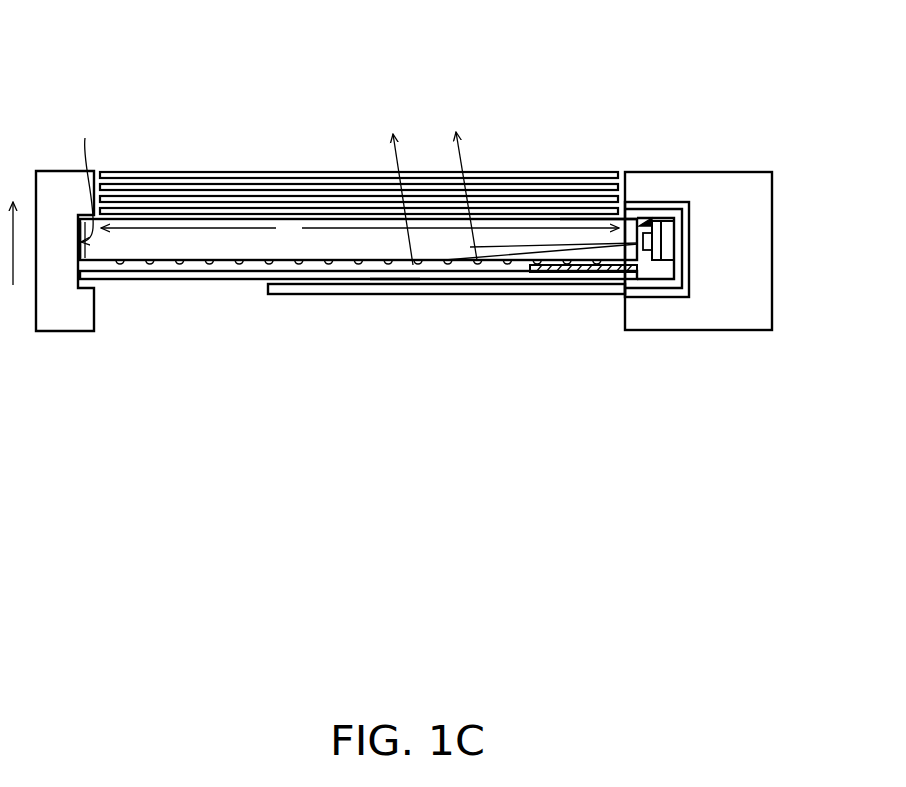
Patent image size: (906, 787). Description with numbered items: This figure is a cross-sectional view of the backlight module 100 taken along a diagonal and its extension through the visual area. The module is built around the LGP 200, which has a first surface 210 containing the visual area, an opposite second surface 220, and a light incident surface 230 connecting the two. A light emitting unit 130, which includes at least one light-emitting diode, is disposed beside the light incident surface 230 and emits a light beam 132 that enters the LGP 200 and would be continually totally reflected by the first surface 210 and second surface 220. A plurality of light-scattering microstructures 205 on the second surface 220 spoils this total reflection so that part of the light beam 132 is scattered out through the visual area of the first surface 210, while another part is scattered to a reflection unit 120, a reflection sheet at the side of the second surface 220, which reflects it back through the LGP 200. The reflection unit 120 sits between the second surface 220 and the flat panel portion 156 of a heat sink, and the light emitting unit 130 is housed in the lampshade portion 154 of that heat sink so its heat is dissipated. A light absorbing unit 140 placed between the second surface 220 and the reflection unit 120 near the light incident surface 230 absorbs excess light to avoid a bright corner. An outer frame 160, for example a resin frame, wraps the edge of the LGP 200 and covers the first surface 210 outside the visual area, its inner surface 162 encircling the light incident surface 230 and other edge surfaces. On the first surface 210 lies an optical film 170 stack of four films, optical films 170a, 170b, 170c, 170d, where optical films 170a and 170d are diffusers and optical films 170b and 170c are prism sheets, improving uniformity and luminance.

The backlight module 100 is at (752, 460).
The reflection unit 120 is at (393, 279).
The light emitting unit 130 is at (647, 250).
The light beam 132 is at (397, 157).
The light absorbing unit 140 is at (597, 272).
The lampshade portion 154 is at (680, 243).
The flat panel portion 156 is at (337, 294).
The outer frame 160 is at (53, 317).
The inner surface 162 is at (86, 187).
The optical film 170 is at (345, 113).
The optical film 170a is at (118, 215).
The optical film 170b is at (193, 200).
The optical film 170c is at (255, 190).
The optical film 170d is at (312, 176).
The LGP 200 is at (135, 248).
The light-scattering microstructures 205 is at (180, 265).
The first surface 210 is at (600, 219).
The second surface 220 is at (283, 267).
The light incident surface 230 is at (642, 224).